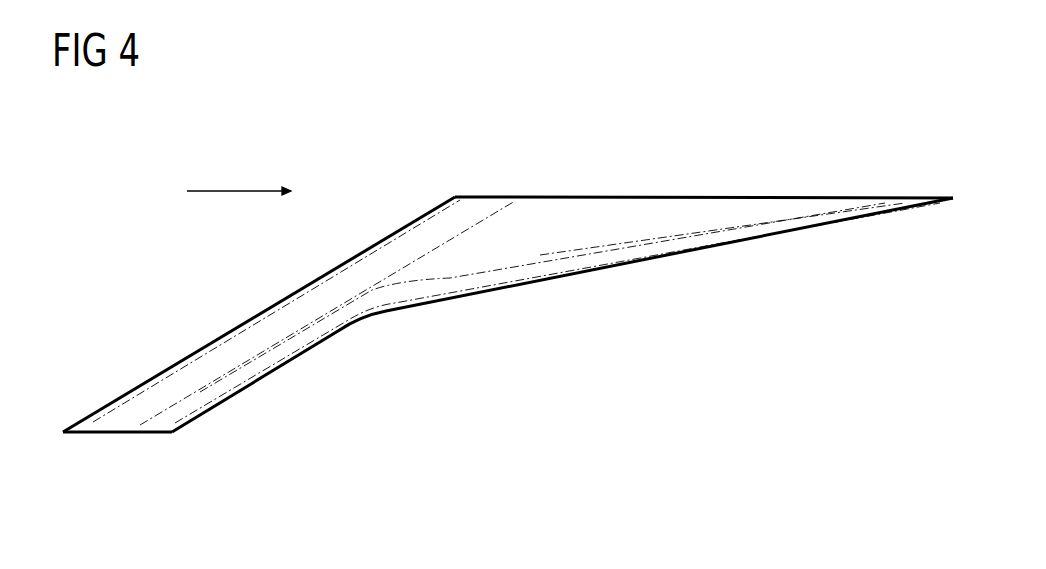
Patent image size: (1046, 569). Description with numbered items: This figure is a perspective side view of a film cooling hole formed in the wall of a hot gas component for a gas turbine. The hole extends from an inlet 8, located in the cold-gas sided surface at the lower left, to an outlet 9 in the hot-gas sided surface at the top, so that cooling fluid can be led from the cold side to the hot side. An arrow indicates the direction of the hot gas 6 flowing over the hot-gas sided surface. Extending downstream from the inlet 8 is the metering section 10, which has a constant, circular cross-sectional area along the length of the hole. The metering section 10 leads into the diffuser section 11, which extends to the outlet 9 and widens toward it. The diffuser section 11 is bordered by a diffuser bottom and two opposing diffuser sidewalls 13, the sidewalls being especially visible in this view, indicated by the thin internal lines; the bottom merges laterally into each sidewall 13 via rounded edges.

The hot gas 6 is at (236, 191).
The inlet 8 is at (116, 434).
The outlet 9 is at (638, 196).
The metering section 10 is at (166, 350).
The diffuser section 11 is at (387, 208).
The diffuser sidewalls 13 is at (496, 256).